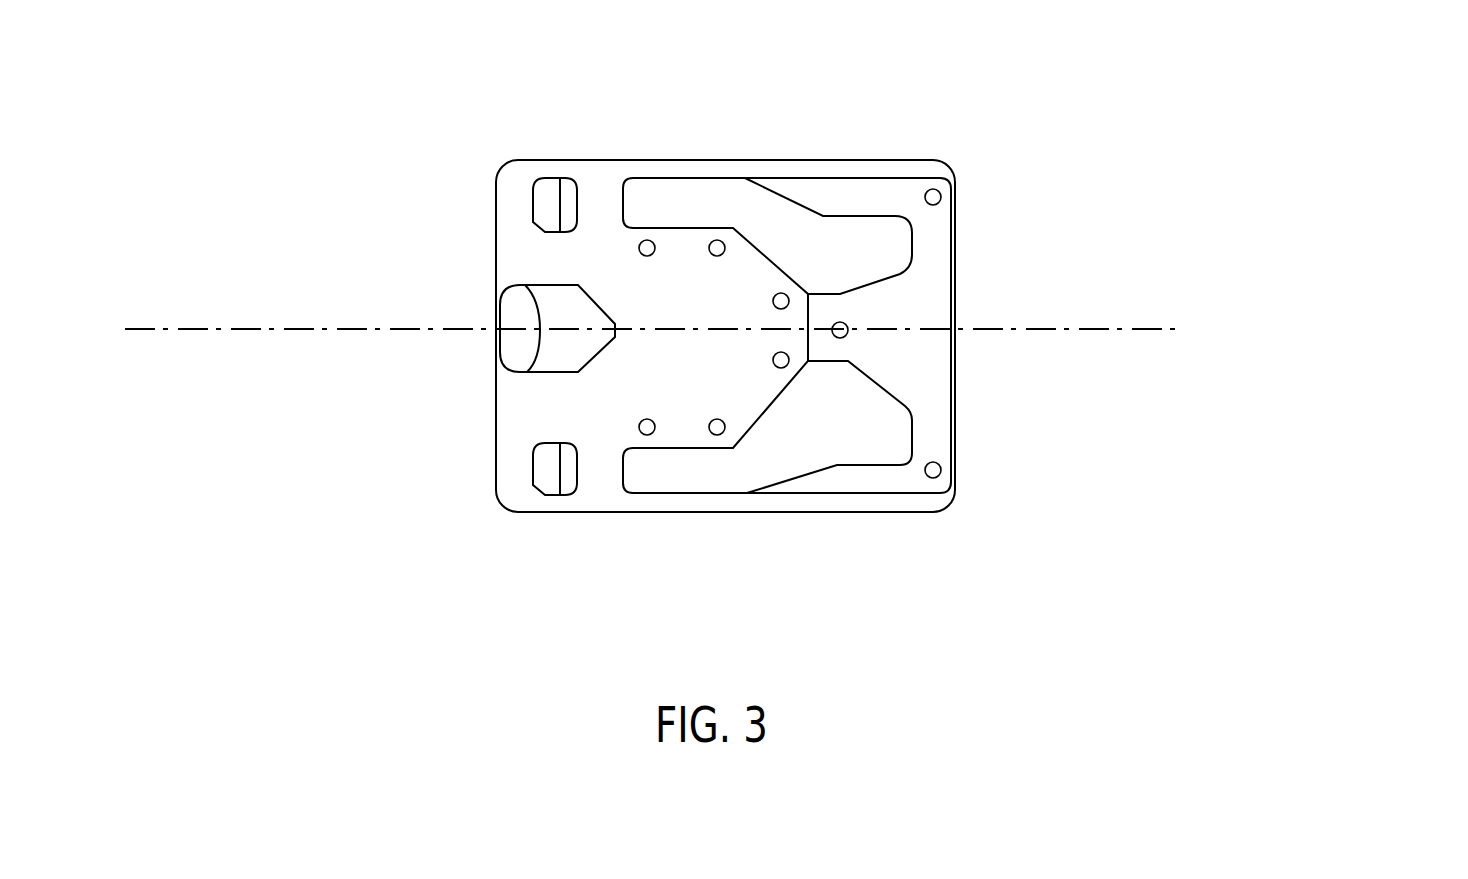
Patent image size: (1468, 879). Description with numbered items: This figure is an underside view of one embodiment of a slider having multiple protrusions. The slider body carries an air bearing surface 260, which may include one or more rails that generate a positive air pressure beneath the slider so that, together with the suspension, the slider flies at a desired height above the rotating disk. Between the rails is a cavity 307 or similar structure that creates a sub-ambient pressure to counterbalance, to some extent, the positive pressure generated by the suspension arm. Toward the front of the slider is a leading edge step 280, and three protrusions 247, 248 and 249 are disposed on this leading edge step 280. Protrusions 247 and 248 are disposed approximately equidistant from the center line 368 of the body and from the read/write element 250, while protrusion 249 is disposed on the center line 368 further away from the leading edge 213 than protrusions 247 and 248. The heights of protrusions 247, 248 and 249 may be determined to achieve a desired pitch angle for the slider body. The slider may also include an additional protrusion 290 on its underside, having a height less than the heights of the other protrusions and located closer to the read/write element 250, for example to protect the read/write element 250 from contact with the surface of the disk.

The leading edge 213 is at (641, 133).
The center line 368 is at (192, 328).
The protrusion 247 is at (942, 187).
The protrusion 248 is at (942, 475).
The protrusion 249 is at (860, 318).
The additional protrusion 290 is at (792, 297).
The cavity 307 is at (890, 341).
The leading edge step 280 is at (920, 347).
The air bearing surface 260 is at (868, 438).
The read/write element 250 is at (522, 335).